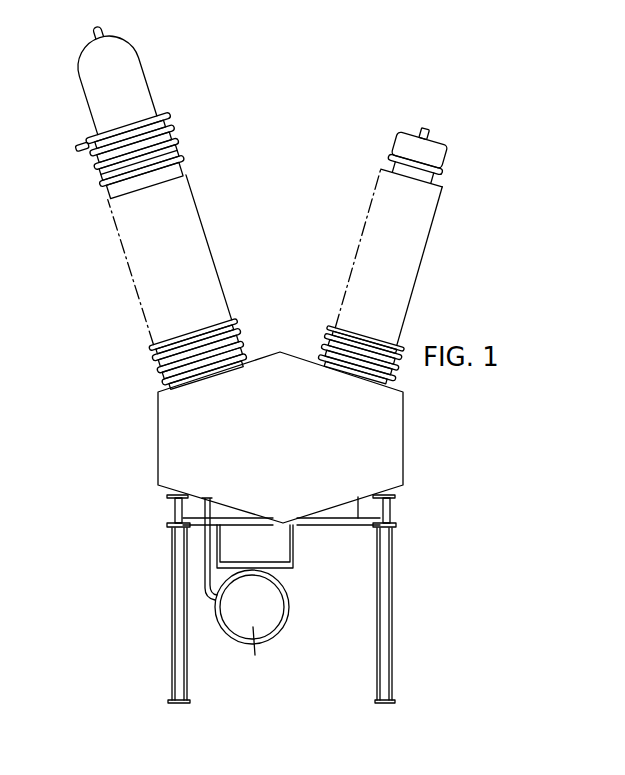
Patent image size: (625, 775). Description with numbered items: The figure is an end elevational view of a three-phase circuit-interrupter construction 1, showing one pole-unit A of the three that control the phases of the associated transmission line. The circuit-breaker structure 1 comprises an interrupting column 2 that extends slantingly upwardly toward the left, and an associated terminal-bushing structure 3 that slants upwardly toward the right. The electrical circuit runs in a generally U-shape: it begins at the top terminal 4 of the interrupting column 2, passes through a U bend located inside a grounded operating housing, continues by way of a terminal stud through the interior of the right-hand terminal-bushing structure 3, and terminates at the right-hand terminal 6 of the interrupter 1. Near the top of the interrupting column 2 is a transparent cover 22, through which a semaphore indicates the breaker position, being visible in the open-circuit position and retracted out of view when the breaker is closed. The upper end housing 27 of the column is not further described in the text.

The three-phase circuit-interrupter construction 1 is at (480, 186).
The interrupting column 2 is at (190, 184).
The terminal-bushing structure 3 is at (428, 233).
The top terminal 4 is at (82, 147).
The right-hand terminal 6 is at (419, 153).
The transparent cover 22 is at (98, 32).
The dome housing 27 is at (113, 81).
The pole-unit A is at (137, 432).